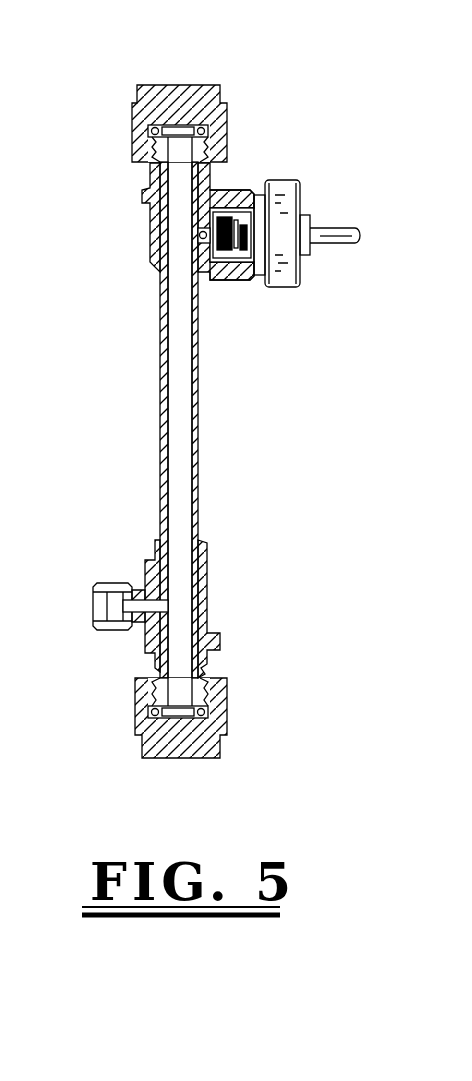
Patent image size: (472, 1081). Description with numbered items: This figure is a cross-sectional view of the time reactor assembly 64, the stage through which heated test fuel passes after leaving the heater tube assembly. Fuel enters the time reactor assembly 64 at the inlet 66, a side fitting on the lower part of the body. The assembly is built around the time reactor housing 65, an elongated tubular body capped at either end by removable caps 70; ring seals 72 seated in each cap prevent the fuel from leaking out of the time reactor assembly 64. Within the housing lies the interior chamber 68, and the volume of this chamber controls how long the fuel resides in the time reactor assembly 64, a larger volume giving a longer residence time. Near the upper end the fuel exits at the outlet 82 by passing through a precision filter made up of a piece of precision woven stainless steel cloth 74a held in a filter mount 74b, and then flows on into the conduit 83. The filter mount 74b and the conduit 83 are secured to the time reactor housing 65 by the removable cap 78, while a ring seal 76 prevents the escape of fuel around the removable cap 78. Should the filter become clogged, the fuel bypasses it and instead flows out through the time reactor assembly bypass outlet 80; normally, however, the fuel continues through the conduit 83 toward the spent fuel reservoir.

The time reactor assembly 64 is at (150, 418).
The time reactor housing 65 is at (198, 466).
The inlet 66 is at (84, 603).
The interior chamber 68 is at (183, 407).
The removable caps 70 is at (185, 85).
The ring seals 72 is at (205, 128).
The precision woven stainless steel cloth 74a is at (205, 195).
The filter mount 74b is at (212, 272).
The ring seal 76 is at (247, 278).
The removable cap 78 is at (276, 178).
The time reactor assembly bypass outlet 80 is at (200, 237).
The outlet 82 is at (310, 197).
The conduit 83 is at (336, 230).